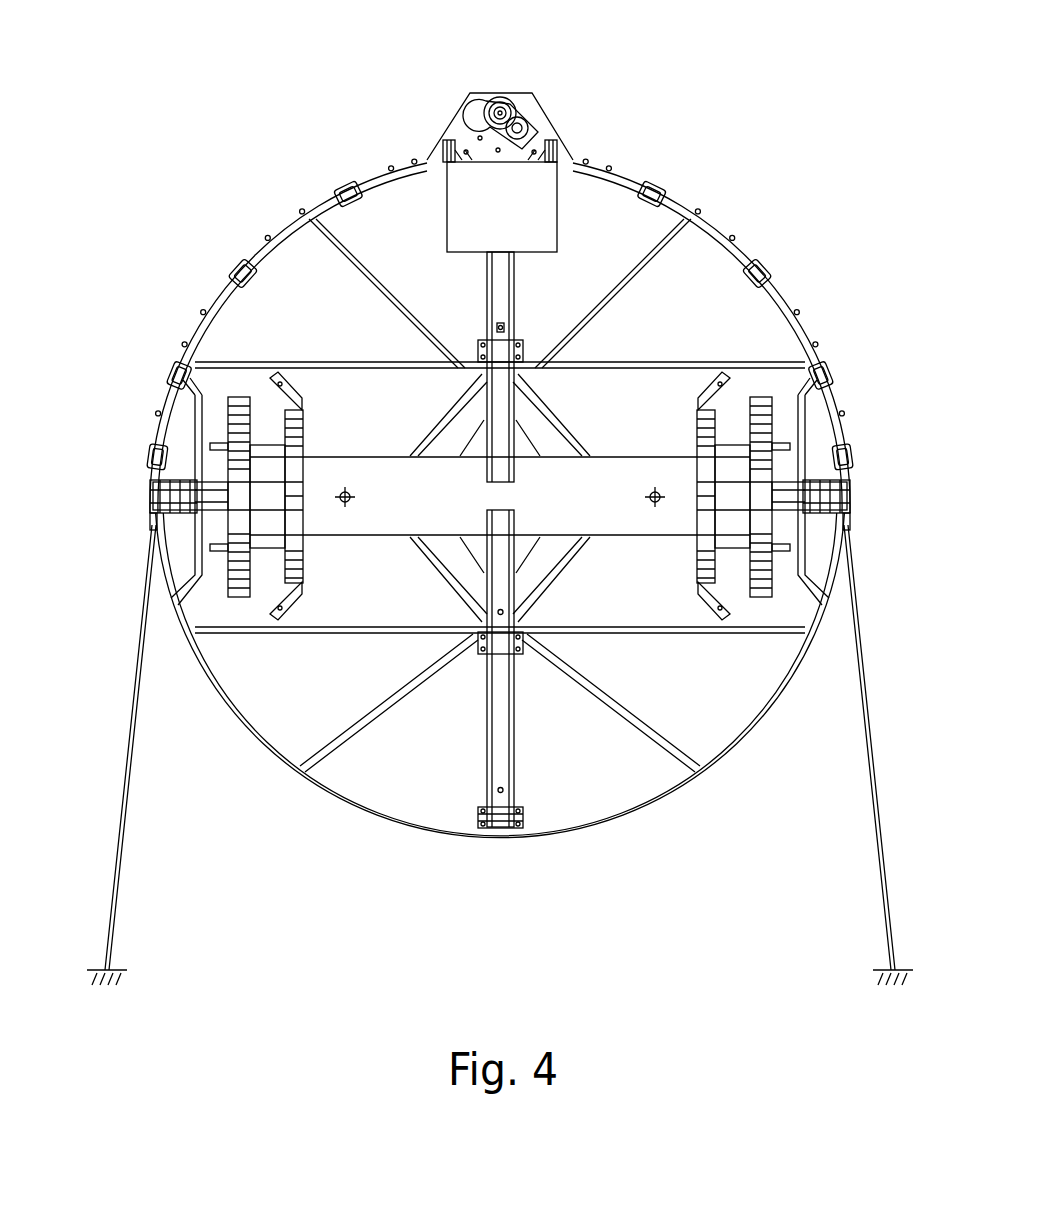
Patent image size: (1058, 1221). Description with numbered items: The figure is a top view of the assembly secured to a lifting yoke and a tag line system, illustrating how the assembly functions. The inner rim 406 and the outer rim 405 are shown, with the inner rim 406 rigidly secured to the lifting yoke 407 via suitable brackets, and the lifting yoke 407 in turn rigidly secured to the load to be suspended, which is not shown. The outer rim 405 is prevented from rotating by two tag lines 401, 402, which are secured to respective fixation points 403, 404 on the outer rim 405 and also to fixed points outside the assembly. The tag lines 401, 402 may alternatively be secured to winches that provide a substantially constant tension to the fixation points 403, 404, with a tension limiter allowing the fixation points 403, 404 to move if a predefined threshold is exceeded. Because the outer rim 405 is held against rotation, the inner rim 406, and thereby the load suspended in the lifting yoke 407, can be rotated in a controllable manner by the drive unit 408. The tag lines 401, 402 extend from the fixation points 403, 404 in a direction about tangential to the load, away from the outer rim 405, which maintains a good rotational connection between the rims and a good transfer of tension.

The tag line 401 is at (140, 610).
The tag line 402 is at (860, 612).
The fixation point 403 is at (152, 520).
The fixation point 404 is at (848, 522).
The outer rim 405 is at (733, 210).
The inner rim 406 is at (716, 754).
The lifting yoke 407 is at (410, 508).
The drive unit 408 is at (502, 103).